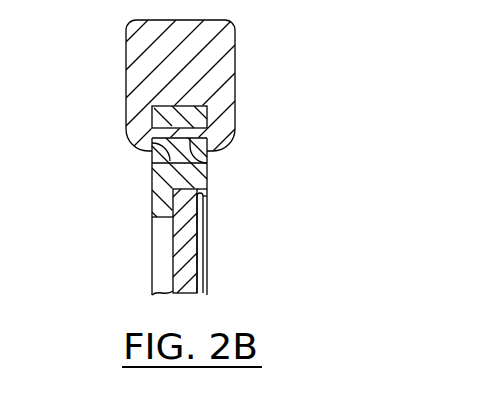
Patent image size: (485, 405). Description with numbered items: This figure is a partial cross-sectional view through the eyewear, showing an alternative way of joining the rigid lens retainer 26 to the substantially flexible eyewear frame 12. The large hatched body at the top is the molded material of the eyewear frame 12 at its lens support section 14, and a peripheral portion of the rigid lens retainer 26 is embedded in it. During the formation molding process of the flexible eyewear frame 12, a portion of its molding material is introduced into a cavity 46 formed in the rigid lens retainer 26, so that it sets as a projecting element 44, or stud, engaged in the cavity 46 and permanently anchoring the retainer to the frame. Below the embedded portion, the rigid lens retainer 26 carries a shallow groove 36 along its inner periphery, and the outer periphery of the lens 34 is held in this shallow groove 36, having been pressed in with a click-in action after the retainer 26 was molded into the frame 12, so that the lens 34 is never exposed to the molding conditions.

The substantially flexible eyewear frame 12 is at (126, 51).
The lens support section 14 is at (126, 108).
The projecting element 44 is at (207, 163).
The cavity 46 is at (152, 163).
The shallow groove 36 is at (207, 219).
The lens 34 is at (194, 266).
The rigid lens retainer 26 is at (152, 254).